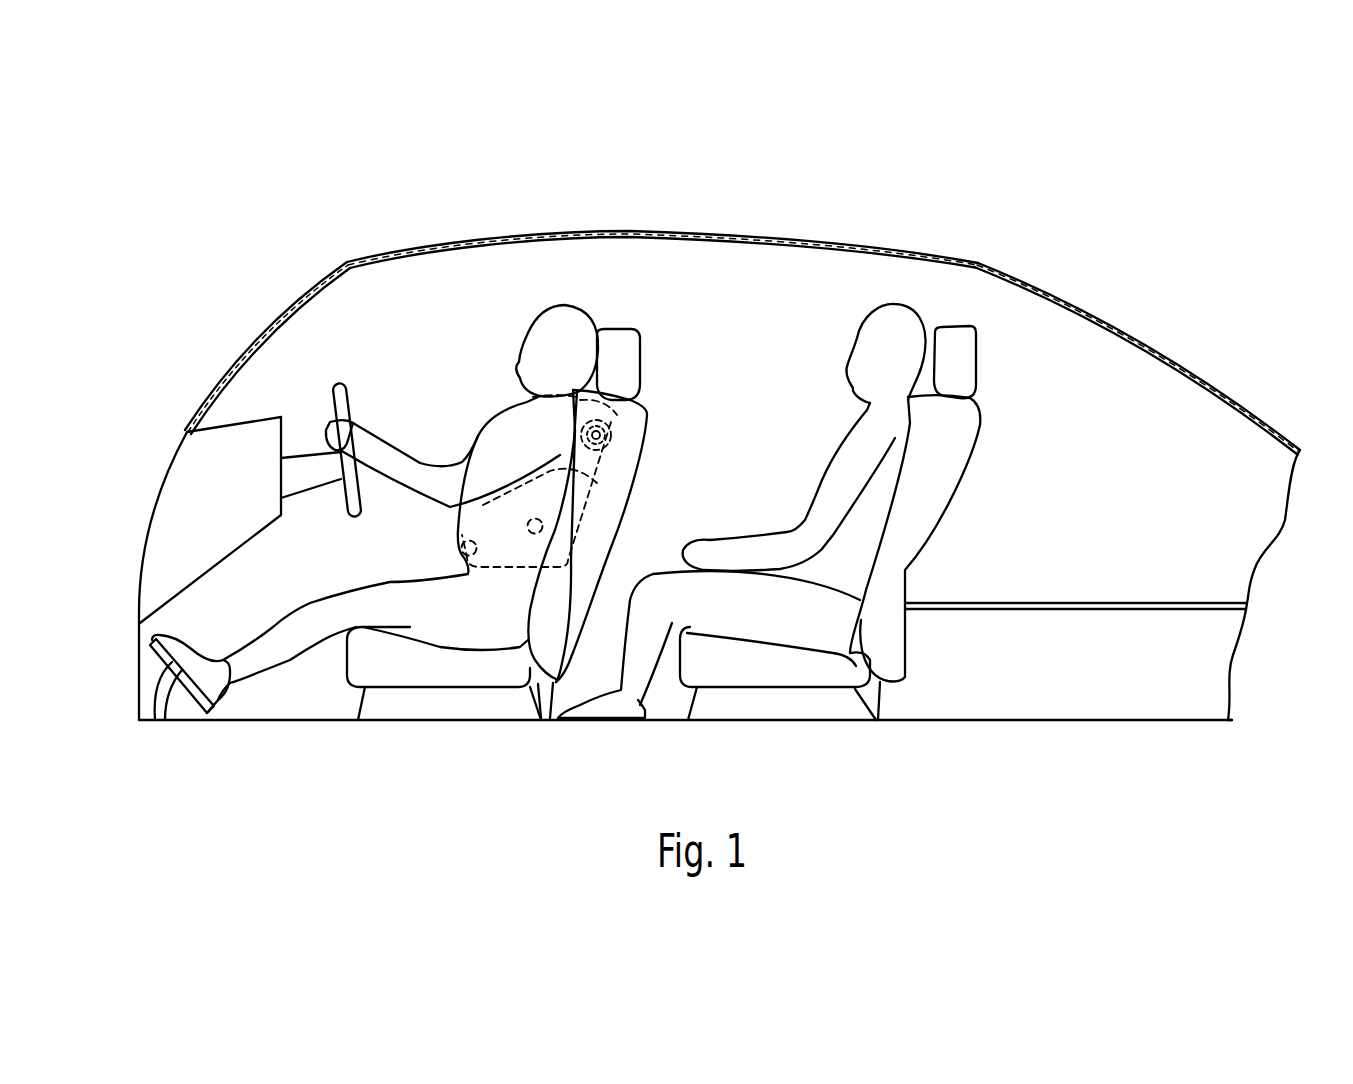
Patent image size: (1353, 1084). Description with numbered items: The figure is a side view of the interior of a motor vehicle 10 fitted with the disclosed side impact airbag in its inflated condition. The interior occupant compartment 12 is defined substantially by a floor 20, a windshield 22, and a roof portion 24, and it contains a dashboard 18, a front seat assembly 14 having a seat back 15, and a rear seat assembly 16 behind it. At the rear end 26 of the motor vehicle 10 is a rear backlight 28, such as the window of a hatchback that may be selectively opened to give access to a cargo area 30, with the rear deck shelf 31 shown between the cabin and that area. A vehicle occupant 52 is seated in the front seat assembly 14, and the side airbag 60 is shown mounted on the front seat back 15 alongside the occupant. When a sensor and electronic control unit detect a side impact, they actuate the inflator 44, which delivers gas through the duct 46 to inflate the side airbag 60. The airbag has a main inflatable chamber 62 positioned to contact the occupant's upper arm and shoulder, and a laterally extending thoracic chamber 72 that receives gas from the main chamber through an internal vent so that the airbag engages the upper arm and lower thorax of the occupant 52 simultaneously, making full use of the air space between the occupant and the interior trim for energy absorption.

The motor vehicle 10 is at (850, 213).
The interior occupant compartment 12 is at (875, 273).
The front seat assembly 14 is at (467, 567).
The seat back 15 is at (627, 447).
The rear seat assembly 16 is at (800, 673).
The dashboard 18 is at (177, 520).
The floor 20 is at (667, 720).
The windshield 22 is at (287, 310).
The roof portion 24 is at (533, 233).
The rear end 26 is at (1163, 736).
The rear backlight 28 is at (1133, 338).
The cargo area 30 is at (1178, 413).
The rear deck 31 is at (1050, 603).
The inflator 44 is at (607, 430).
The duct 46 is at (643, 420).
The vehicle occupant 52 is at (410, 613).
The side airbag 60 is at (490, 430).
The main inflatable chamber 62 is at (588, 400).
The laterally extending thoracic chamber 72 is at (583, 493).